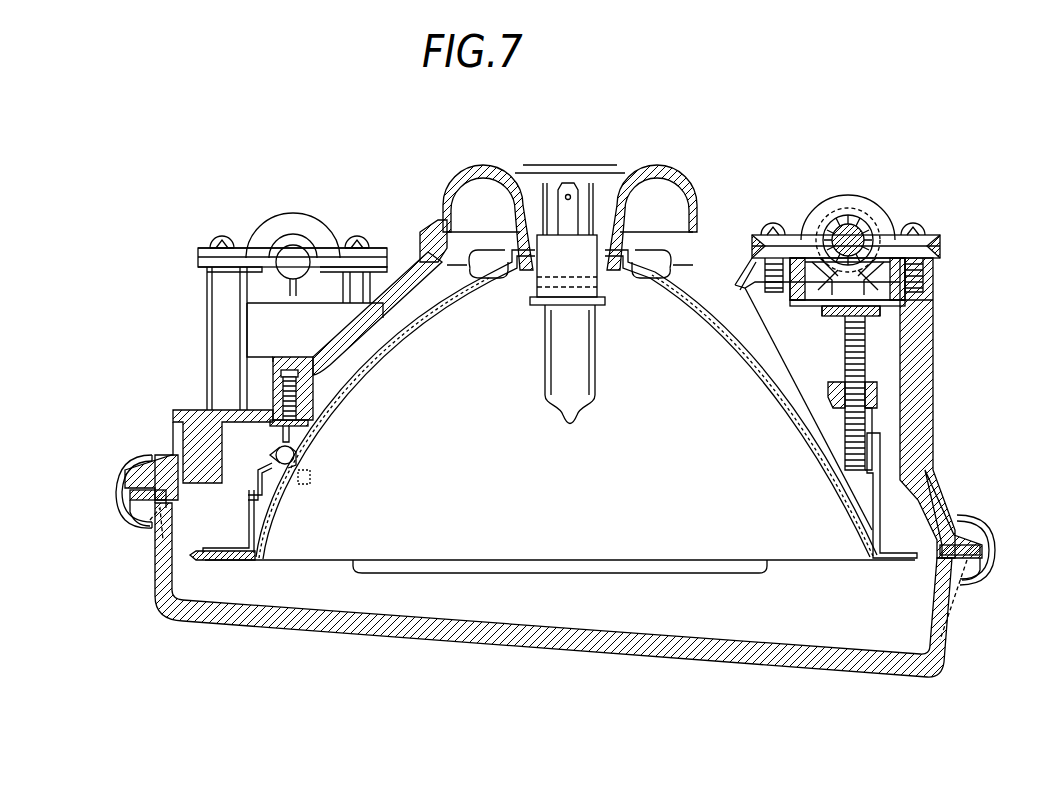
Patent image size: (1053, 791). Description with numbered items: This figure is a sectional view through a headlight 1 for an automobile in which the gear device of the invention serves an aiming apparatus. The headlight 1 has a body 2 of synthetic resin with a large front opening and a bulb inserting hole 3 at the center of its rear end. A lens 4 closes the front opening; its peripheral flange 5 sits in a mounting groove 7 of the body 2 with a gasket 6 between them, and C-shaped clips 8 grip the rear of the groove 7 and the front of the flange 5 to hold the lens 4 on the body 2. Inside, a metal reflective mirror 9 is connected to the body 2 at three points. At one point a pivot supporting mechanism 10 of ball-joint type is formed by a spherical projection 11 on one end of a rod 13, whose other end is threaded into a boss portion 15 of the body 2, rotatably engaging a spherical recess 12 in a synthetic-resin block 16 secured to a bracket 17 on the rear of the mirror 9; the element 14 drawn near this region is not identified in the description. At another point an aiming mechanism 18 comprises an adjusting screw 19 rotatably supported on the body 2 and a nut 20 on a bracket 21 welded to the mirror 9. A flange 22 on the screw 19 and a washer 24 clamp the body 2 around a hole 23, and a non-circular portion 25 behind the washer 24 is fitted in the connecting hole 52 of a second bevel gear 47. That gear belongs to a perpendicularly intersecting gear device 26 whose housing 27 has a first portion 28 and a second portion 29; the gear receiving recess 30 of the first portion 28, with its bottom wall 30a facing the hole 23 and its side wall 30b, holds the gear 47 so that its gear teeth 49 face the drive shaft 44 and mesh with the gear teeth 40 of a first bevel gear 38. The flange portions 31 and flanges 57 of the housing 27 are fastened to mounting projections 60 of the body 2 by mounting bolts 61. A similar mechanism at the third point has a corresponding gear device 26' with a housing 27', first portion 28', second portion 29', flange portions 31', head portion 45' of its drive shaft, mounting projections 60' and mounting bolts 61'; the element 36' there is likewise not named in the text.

The headlight 1 is at (692, 106).
The body 2 is at (366, 318).
The bulb inserting hole 3 is at (690, 222).
The lens 4 is at (490, 648).
The peripheral flange 5 is at (150, 518).
The gasket 6 is at (124, 512).
The mounting groove 7 is at (128, 492).
The C-shaped clips 8 is at (120, 470).
The reflective mirror 9 is at (396, 350).
The pivot supporting mechanism 10 is at (315, 430).
The spherical projection 11 is at (305, 460).
The spherical recess 12 is at (276, 454).
The rod 13 is at (305, 437).
The bracket block 14 is at (273, 362).
The boss portion 15 is at (314, 396).
The block 16 is at (258, 485).
The bracket 17 is at (248, 530).
The aiming mechanism 18 is at (812, 382).
The adjusting screw 19 is at (825, 355).
The nut 20 is at (880, 390).
The bracket 21 is at (885, 520).
The flange 22 is at (933, 360).
The hole 23 is at (846, 312).
The washer 24 is at (825, 310).
The non-circular portion 25 is at (866, 318).
The perpendicularly intersecting gear device 26 is at (854, 179).
The housing 27 is at (896, 242).
The first portion 28 is at (973, 250).
The second portion 29 is at (878, 234).
The gear receiving recess 30 is at (876, 262).
The bottom wall 30a is at (820, 296).
The side wall 30b is at (810, 262).
The flange portions 31 is at (736, 244).
The screw boss 36' is at (284, 203).
The first bevel gear 38 is at (850, 208).
The gear teeth 40 is at (822, 262).
The drive shaft 44 is at (846, 222).
The head portion 45' is at (298, 227).
The second bevel gear 47 is at (760, 312).
The gear teeth 49 is at (906, 300).
The connecting hole 52 is at (933, 320).
The flanges 57 is at (766, 230).
The mounting projections 60 is at (834, 408).
The mounting bolts 61 is at (835, 174).
The gear device 26' is at (286, 195).
The housing 27' is at (237, 247).
The first portion 28' is at (257, 260).
The second portion 29' is at (257, 234).
The flange portions 31' is at (286, 232).
The mounting projections 60' is at (296, 299).
The mounting bolts 61' is at (274, 201).